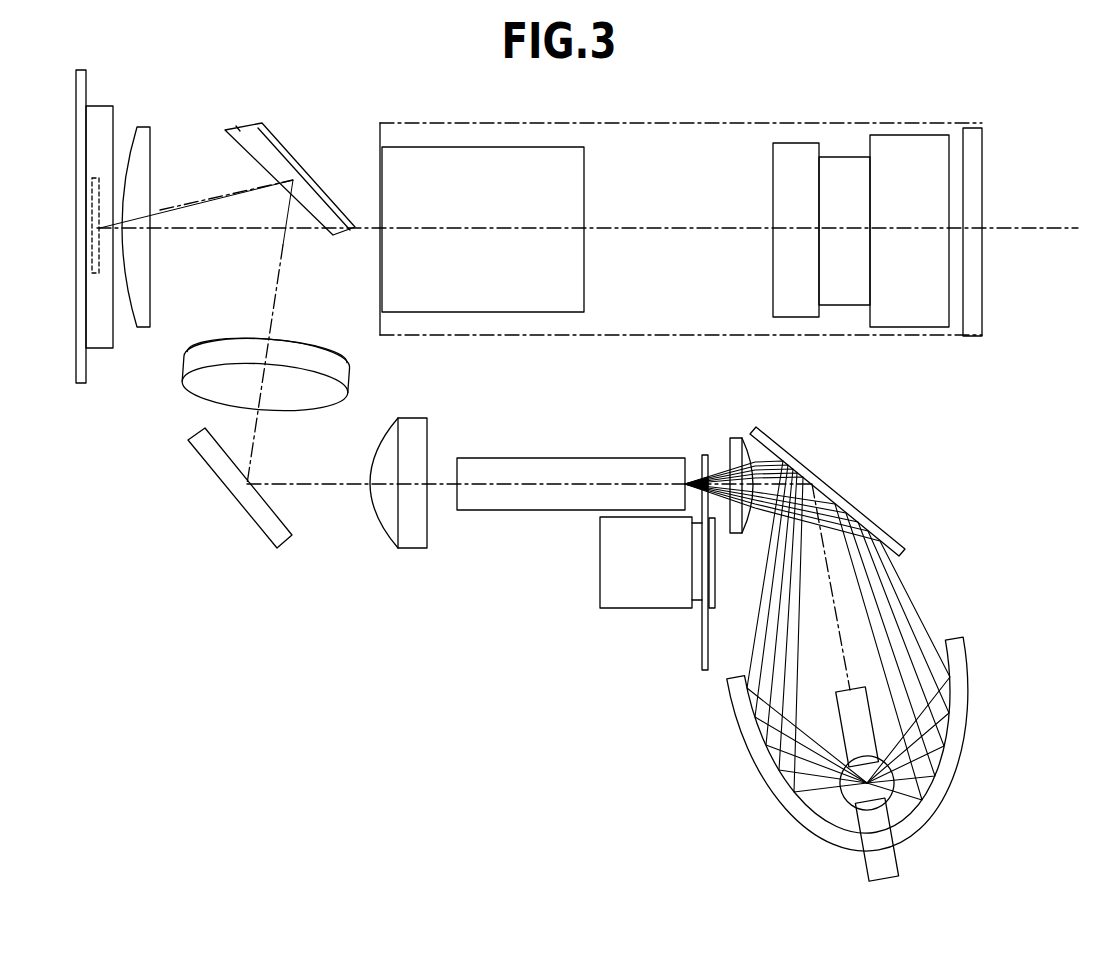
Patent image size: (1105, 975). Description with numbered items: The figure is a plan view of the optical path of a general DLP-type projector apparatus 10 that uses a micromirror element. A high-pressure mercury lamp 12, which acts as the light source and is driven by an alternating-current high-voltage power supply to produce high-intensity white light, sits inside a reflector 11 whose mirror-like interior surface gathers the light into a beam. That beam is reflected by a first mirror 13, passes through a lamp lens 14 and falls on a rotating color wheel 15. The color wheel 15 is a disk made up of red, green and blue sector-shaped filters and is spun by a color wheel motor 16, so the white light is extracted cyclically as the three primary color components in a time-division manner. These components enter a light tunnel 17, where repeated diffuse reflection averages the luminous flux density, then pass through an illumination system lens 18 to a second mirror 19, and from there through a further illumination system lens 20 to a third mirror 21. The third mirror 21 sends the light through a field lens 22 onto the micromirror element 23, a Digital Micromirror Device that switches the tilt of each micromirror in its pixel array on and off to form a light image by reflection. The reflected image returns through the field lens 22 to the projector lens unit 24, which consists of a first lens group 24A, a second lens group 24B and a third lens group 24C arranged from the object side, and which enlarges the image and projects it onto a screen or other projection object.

The projector apparatus 10 is at (449, 633).
The reflector 11 is at (962, 668).
The high-pressure mercury lamp 12 is at (847, 805).
The first mirror 13 is at (865, 528).
The lamp lens 14 is at (735, 442).
The color wheel 15 is at (707, 637).
The color wheel motor 16 is at (609, 561).
The light tunnel 17 is at (602, 467).
The illumination system lens 18 is at (415, 427).
The second mirror 19 is at (207, 455).
The illumination system lens 20 is at (302, 363).
The third mirror 21 is at (277, 133).
The field lens 22 is at (143, 128).
The micromirror element 23 is at (100, 343).
The projector lens unit 24 is at (818, 123).
The first lens group 24A is at (973, 158).
The second lens group 24B is at (780, 175).
The third lens group 24C is at (577, 275).